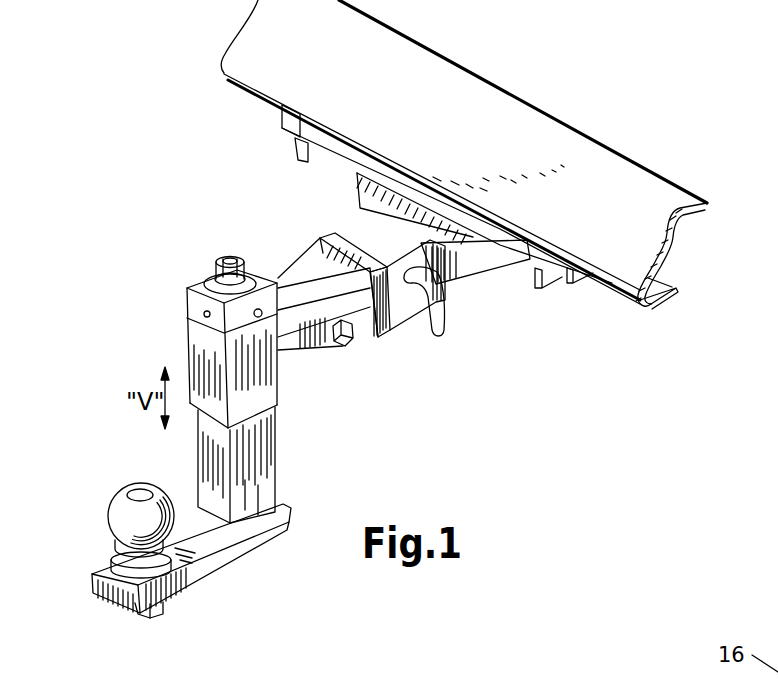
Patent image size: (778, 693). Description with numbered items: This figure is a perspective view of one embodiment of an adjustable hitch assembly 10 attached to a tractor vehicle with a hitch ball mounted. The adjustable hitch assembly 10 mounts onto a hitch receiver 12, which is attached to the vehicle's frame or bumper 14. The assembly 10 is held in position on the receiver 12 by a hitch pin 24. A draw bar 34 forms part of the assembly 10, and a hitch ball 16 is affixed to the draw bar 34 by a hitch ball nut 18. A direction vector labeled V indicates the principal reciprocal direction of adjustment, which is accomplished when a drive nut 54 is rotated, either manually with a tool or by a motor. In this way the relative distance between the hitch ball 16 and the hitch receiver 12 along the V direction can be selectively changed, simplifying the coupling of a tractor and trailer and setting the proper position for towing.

The adjustable hitch assembly 10 is at (375, 419).
The hitch receiver 12 is at (477, 268).
The bumper 14 is at (621, 268).
The hitch ball 16 is at (126, 513).
The hitch ball nut 18 is at (150, 617).
The hitch pin 24 is at (441, 337).
The draw bar 34 is at (222, 567).
The drive nut 54 is at (230, 263).